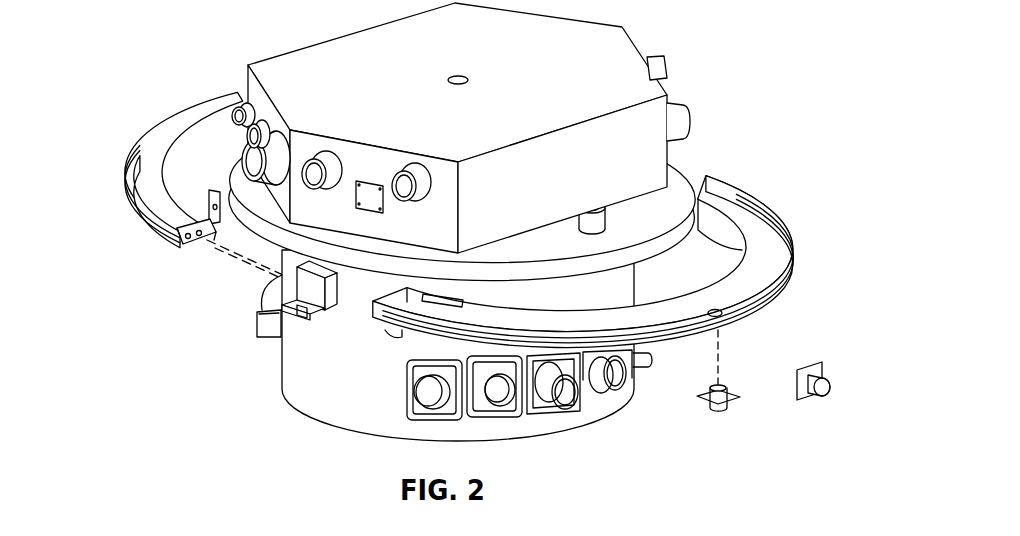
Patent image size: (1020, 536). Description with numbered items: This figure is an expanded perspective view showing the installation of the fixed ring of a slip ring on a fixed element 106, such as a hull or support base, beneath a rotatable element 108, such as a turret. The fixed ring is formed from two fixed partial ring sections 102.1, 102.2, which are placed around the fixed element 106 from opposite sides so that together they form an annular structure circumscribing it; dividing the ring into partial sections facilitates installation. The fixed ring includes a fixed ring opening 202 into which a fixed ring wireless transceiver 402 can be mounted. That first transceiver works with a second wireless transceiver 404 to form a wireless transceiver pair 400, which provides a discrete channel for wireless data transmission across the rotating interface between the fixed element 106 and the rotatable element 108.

The rotatable element 108 is at (620, 33).
The fixed element 106 is at (617, 408).
The fixed partial ring section 102.1 is at (631, 263).
The fixed partial ring section 102.2 is at (153, 226).
The fixed ring opening 202 is at (722, 315).
The wireless transceiver pair 400 is at (794, 402).
The fixed ring wireless transceiver 402 is at (718, 412).
The second wireless transceiver 404 is at (803, 397).